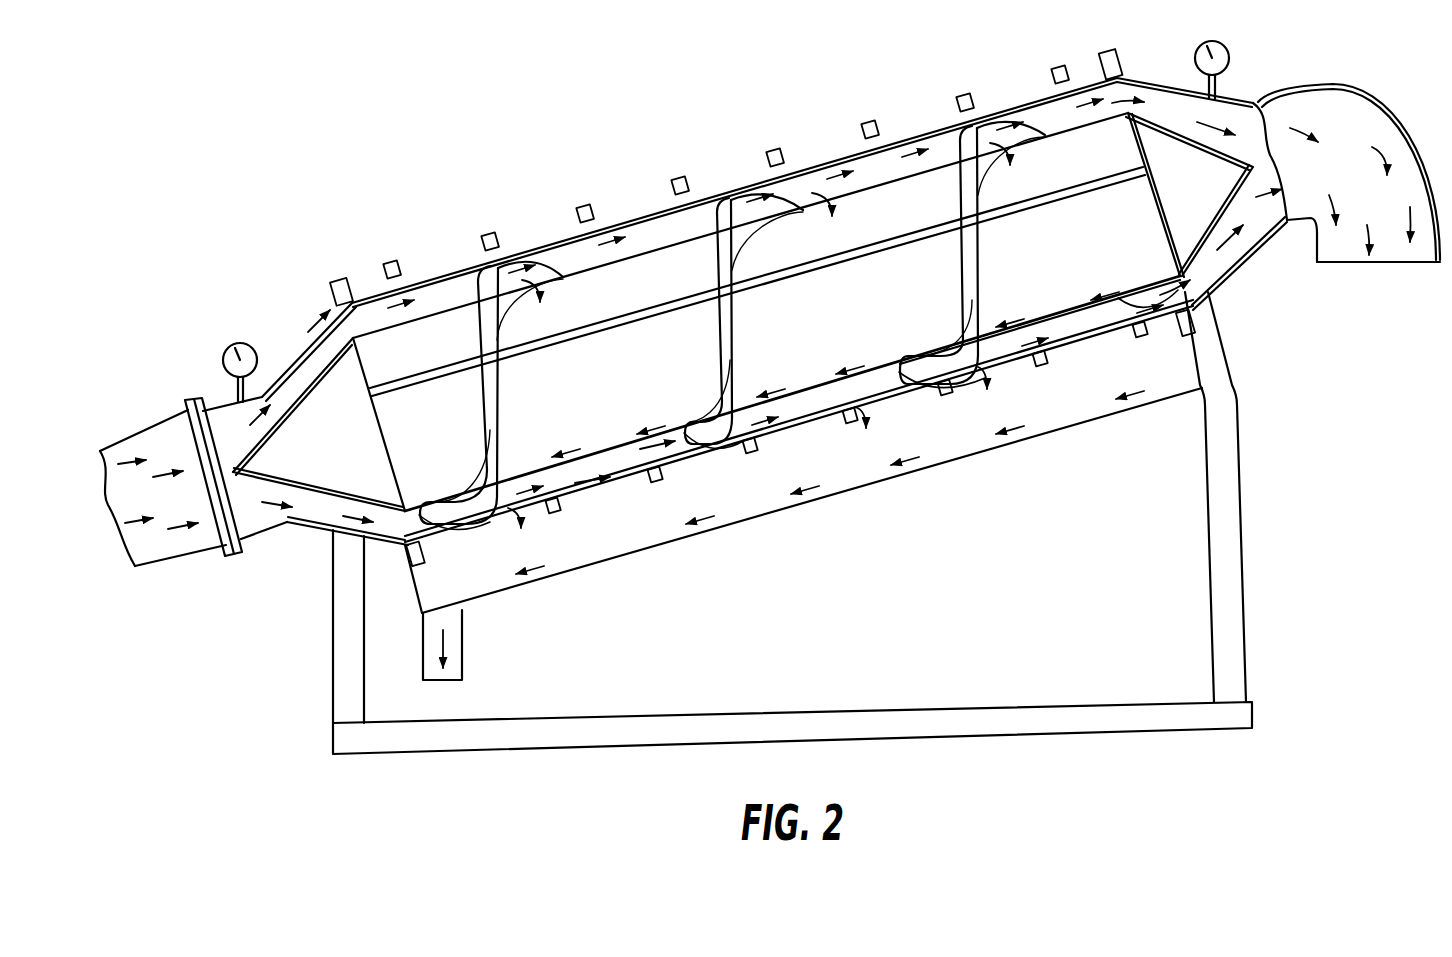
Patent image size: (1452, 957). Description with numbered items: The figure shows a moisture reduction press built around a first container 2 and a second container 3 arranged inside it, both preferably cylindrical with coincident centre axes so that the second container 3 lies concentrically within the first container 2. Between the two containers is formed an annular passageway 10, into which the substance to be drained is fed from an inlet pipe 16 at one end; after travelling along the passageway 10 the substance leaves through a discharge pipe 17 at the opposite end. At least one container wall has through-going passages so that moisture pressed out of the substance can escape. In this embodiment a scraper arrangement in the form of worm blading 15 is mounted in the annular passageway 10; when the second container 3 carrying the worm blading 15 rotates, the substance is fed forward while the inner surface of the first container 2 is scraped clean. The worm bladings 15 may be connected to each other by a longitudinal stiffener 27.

The first container 2 is at (437, 273).
The second container 3 is at (620, 450).
The annular passageway 10 is at (627, 233).
The worm blading 15 is at (955, 150).
The inlet pipe 16 is at (145, 445).
The discharge pipe 17 is at (1390, 248).
The longitudinal stiffener 27 is at (802, 267).